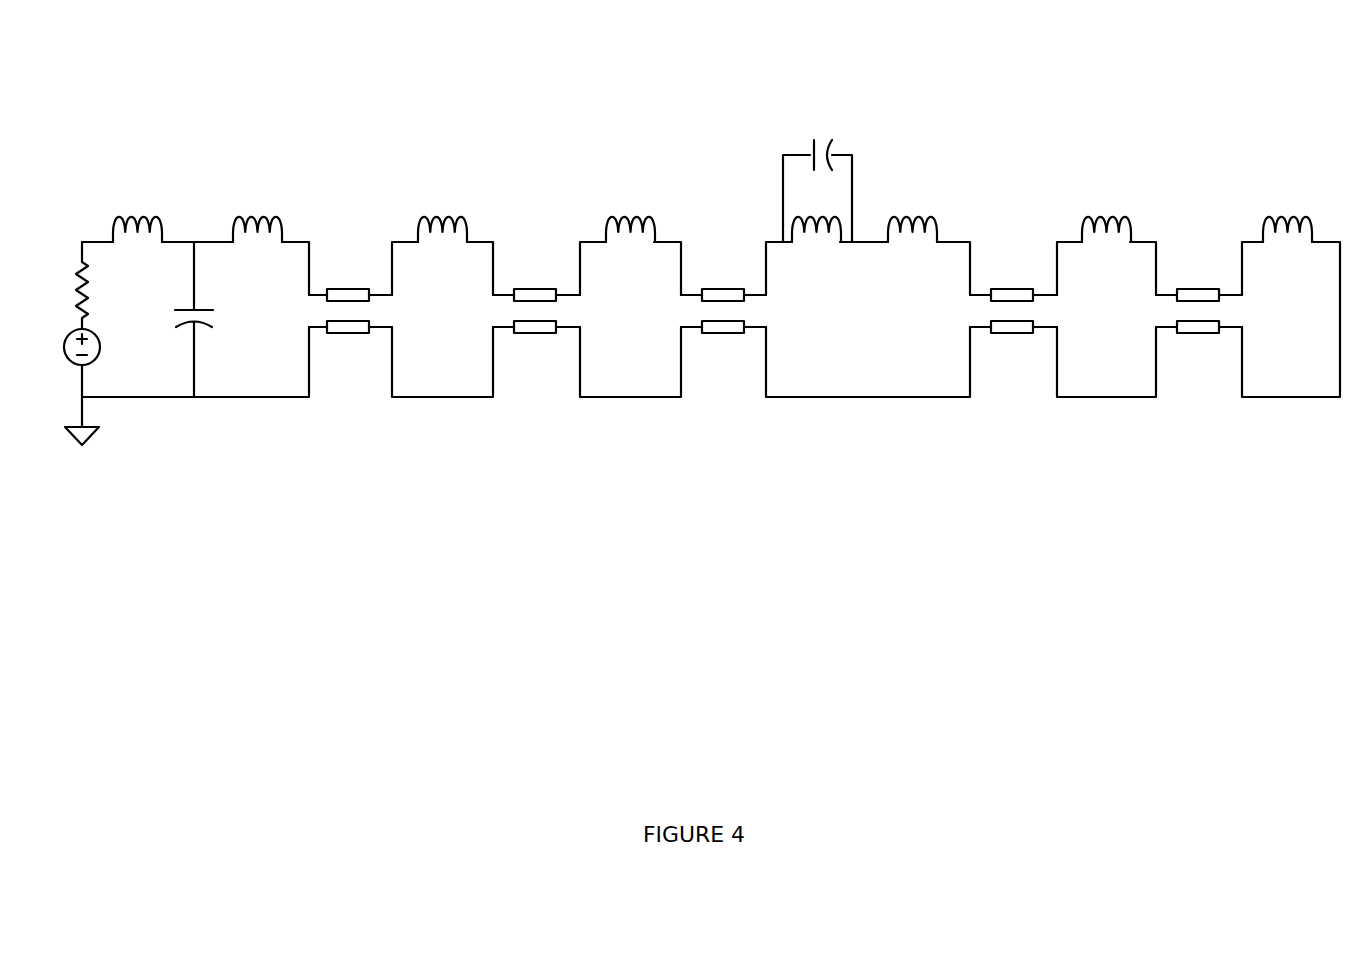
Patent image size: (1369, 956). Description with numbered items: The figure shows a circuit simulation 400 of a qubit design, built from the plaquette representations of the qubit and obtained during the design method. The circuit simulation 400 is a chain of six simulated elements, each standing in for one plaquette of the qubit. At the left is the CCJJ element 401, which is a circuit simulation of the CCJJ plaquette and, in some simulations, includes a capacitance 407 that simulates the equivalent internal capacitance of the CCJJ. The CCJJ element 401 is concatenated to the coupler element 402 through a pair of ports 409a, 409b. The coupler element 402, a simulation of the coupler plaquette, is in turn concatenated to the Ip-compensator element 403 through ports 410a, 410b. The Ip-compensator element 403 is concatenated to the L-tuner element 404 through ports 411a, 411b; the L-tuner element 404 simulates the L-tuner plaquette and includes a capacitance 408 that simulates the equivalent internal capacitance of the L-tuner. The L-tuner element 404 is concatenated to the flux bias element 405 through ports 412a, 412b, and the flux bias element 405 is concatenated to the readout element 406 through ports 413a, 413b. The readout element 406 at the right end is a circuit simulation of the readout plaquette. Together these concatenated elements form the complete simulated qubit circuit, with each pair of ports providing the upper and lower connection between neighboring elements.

The circuit simulation 400 is at (165, 68).
The CCJJ element 401 is at (226, 423).
The coupler element 402 is at (432, 423).
The Ip-compensator element 403 is at (608, 423).
The L-tuner element 404 is at (836, 302).
The flux bias element 405 is at (1090, 423).
The readout element 406 is at (1292, 423).
The capacitance 407 is at (194, 283).
The capacitance 408 is at (796, 155).
The port 409a is at (350, 290).
The port 409b is at (348, 334).
The port 410a is at (536, 290).
The port 410b is at (535, 334).
The port 411a is at (724, 290).
The port 411b is at (723, 334).
The port 412a is at (1013, 290).
The port 412b is at (1012, 334).
The port 413a is at (1199, 290).
The port 413b is at (1198, 334).